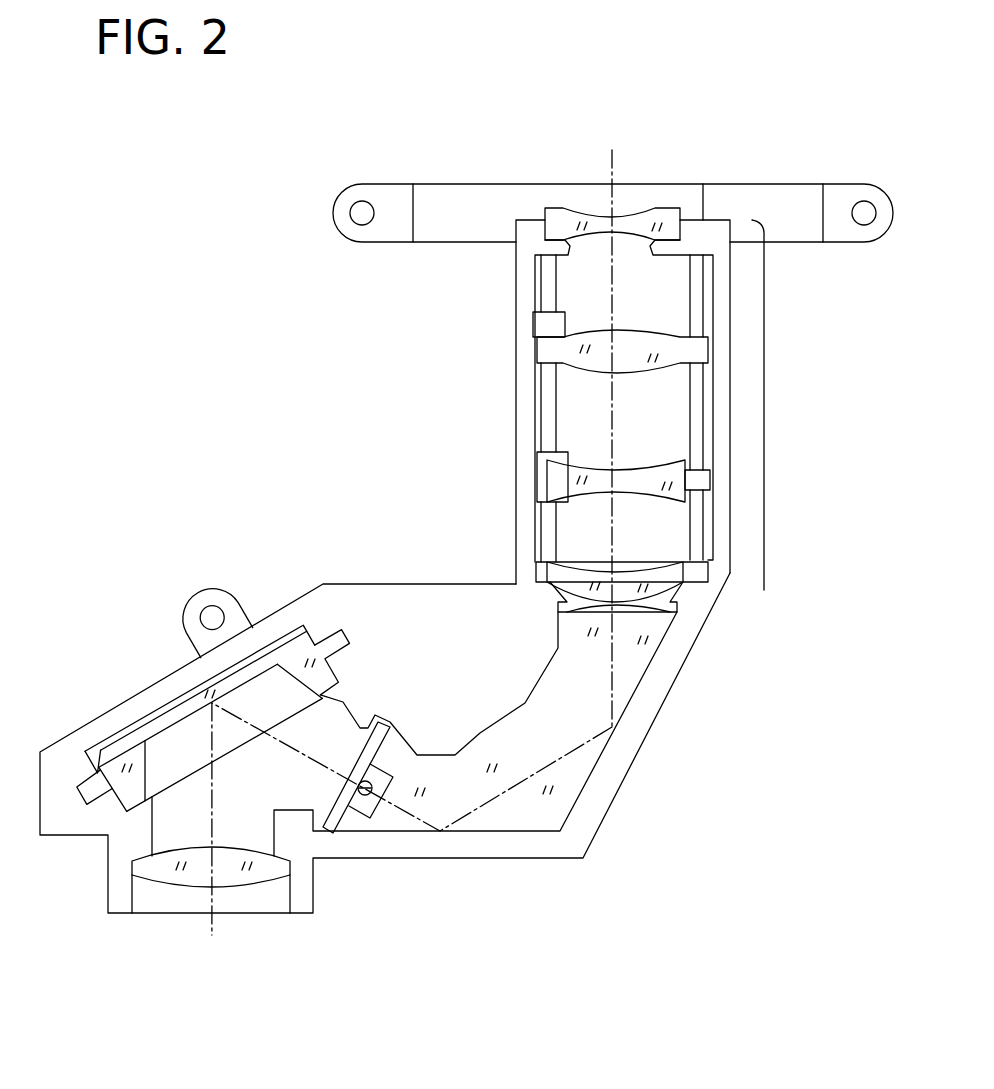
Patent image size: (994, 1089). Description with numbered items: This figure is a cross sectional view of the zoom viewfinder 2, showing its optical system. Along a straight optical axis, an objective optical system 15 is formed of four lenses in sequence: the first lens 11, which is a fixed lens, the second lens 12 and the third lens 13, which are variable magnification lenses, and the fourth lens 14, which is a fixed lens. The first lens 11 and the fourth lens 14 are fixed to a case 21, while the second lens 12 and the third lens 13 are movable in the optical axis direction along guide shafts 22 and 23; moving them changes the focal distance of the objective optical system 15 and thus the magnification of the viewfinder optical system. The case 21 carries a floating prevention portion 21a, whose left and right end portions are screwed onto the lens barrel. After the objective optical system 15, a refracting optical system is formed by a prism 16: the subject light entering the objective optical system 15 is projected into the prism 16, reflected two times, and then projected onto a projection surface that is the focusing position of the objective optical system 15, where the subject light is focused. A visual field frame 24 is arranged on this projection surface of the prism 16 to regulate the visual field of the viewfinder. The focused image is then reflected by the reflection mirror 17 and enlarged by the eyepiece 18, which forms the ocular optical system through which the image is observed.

The zoom viewfinder 2 is at (409, 515).
The first lens 11 is at (636, 208).
The second lens 12 is at (640, 332).
The third lens 13 is at (578, 460).
The fourth lens 14 is at (652, 566).
The objective optical system 15 is at (781, 405).
The prism 16 is at (497, 817).
The reflection mirror 17 is at (155, 723).
The eyepiece 18 is at (147, 880).
The case 21 is at (516, 432).
The floating prevention portion 21a is at (742, 184).
The guide shaft 22 is at (540, 385).
The guide shaft 23 is at (690, 408).
The visual field frame 24 is at (343, 789).